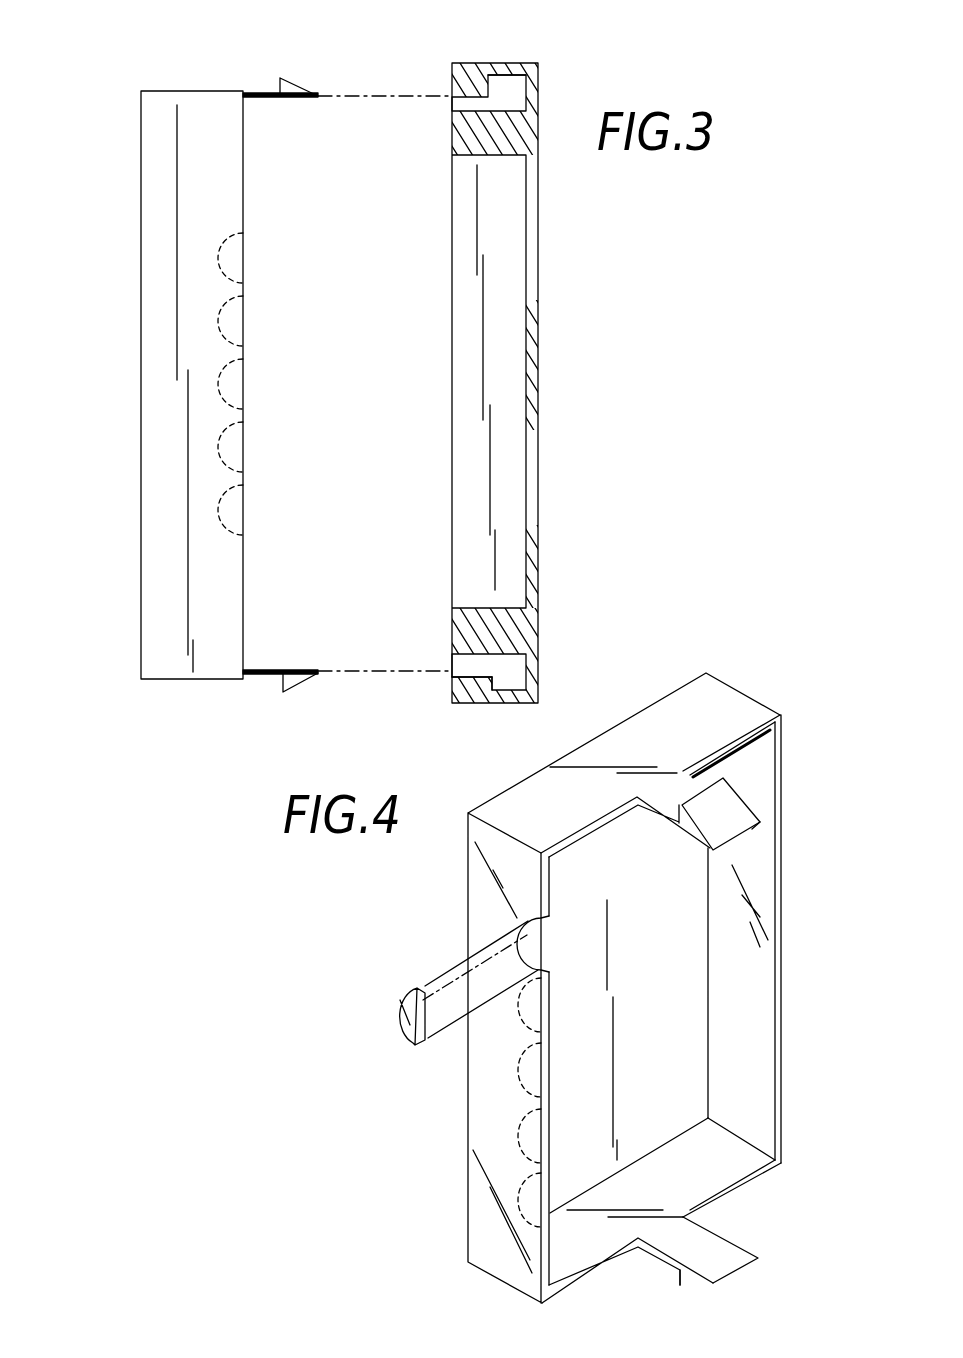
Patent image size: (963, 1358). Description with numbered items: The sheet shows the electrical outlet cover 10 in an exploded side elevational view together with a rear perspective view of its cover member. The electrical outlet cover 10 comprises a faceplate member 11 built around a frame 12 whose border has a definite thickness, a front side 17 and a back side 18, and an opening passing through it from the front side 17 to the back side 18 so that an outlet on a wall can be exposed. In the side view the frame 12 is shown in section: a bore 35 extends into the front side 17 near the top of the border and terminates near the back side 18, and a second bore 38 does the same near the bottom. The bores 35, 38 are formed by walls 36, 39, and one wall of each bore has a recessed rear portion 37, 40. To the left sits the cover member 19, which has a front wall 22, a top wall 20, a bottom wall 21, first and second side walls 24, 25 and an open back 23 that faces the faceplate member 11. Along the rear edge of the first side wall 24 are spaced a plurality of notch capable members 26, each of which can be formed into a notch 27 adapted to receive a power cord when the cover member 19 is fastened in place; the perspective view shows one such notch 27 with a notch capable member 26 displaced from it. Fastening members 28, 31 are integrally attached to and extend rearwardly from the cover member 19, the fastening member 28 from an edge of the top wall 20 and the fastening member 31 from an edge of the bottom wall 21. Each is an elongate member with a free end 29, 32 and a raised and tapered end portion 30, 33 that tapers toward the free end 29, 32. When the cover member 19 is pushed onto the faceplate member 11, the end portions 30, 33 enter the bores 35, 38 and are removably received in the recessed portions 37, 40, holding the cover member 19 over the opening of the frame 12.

In FIG. 3, the electrical outlet cover 10 is at (608, 34).
In FIG. 3, the faceplate member 11 is at (522, 63).
In FIG. 3, the frame 12 is at (535, 667).
In FIG. 3, the front side 17 is at (452, 152).
In FIG. 3, the back side 18 is at (540, 291).
In FIG. 3, the cover member 19 is at (148, 207).
In FIG. 4, the cover member 19 is at (748, 710).
In FIG. 4, the top wall 20 is at (715, 690).
In FIG. 4, the bottom wall 21 is at (586, 1243).
In FIG. 4, the front wall 22 is at (672, 1020).
In FIG. 4, the open back 23 is at (733, 970).
In FIG. 3, the first side wall 24 is at (160, 460).
In FIG. 4, the first side wall 24 is at (485, 1215).
In FIG. 4, the second side wall 25 is at (748, 1080).
In FIG. 3, the notch capable members 26 is at (235, 260).
In FIG. 4, the notch capable members 26 is at (533, 1137).
In FIG. 4, the notch 27 is at (537, 940).
In FIG. 3, the fastening member 28 is at (260, 95).
In FIG. 4, the fastening member 28 is at (683, 787).
In FIG. 3, the free end 29 is at (318, 96).
In FIG. 4, the free end 29 is at (752, 829).
In FIG. 3, the raised and tapered end portion 30 is at (293, 83).
In FIG. 4, the raised and tapered end portion 30 is at (735, 806).
In FIG. 3, the fastening member 31 is at (262, 680).
In FIG. 4, the fastening member 31 is at (697, 1243).
In FIG. 3, the free end 32 is at (321, 675).
In FIG. 4, the free end 32 is at (683, 1286).
In FIG. 3, the raised and tapered end portion 33 is at (290, 683).
In FIG. 4, the raised and tapered end portion 33 is at (689, 1282).
In FIG. 3, the bore 35 is at (498, 103).
In FIG. 3, the wall 36 is at (477, 90).
In FIG. 3, the recessed rear portion 37 is at (495, 75).
In FIG. 3, the bore 38 is at (512, 677).
In FIG. 3, the wall 39 is at (480, 678).
In FIG. 3, the recessed rear portion 40 is at (502, 680).